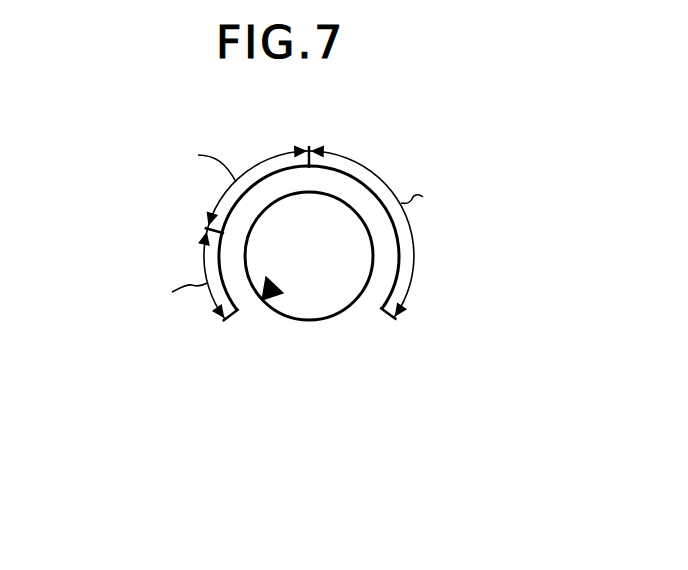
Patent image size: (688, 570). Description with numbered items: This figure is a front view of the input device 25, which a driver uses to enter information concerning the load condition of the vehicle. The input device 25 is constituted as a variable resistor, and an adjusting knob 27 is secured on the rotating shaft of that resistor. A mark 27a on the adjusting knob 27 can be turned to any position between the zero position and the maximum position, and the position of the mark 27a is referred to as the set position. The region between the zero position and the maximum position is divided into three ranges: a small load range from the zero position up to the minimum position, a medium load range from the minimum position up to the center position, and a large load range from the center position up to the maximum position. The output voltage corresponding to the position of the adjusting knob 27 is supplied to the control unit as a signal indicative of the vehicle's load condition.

The input device 25 is at (440, 130).
The adjusting knob 27 is at (342, 293).
The mark 27a is at (265, 300).